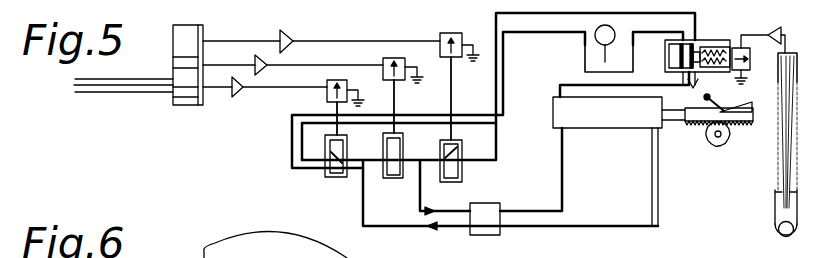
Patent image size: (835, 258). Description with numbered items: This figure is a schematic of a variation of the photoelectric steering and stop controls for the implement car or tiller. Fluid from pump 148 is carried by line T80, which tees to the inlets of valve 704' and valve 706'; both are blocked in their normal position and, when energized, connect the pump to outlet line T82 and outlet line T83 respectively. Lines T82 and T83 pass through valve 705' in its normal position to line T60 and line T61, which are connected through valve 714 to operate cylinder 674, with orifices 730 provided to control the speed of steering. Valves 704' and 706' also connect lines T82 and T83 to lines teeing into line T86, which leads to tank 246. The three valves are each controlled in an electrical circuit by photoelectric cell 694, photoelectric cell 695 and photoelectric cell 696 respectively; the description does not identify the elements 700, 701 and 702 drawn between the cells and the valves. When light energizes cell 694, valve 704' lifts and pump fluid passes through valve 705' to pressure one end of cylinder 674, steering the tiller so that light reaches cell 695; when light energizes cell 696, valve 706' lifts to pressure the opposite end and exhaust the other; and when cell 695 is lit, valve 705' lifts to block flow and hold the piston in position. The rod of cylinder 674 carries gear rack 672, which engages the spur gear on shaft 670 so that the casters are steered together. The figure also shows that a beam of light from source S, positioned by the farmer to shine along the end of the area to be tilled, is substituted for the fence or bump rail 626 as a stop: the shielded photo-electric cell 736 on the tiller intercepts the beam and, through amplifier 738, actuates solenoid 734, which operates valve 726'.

The photoelectric cell 694 is at (200, 28).
The photoelectric cell 695 is at (185, 63).
The photoelectric cell 696 is at (176, 97).
The amplifier 700 is at (288, 40).
The amplifier 701 is at (268, 64).
The amplifier 702 is at (245, 86).
The valve 706' is at (327, 107).
The valve 705' is at (413, 95).
The line T80 is at (497, 25).
The valve 704' is at (475, 98).
The line T86 is at (560, 33).
The pump 148 is at (596, 31).
The tank 246 is at (572, 62).
The valve 726' is at (704, 51).
The solenoid 734 is at (758, 59).
The amplifier 738 is at (781, 34).
The photo-electric cell 736 is at (786, 54).
The fence or bump rail 626 is at (779, 170).
The source S is at (779, 237).
The cylinder 674 is at (590, 128).
The gear rack 672 is at (755, 118).
The shaft 670 is at (712, 146).
The line T60 is at (362, 190).
The line T61 is at (418, 197).
The outlet line T82 is at (413, 158).
The outlet line T83 is at (356, 160).
The orifices 730 is at (428, 217).
The valve 714 is at (500, 233).